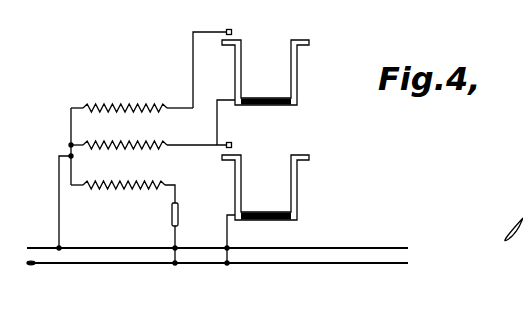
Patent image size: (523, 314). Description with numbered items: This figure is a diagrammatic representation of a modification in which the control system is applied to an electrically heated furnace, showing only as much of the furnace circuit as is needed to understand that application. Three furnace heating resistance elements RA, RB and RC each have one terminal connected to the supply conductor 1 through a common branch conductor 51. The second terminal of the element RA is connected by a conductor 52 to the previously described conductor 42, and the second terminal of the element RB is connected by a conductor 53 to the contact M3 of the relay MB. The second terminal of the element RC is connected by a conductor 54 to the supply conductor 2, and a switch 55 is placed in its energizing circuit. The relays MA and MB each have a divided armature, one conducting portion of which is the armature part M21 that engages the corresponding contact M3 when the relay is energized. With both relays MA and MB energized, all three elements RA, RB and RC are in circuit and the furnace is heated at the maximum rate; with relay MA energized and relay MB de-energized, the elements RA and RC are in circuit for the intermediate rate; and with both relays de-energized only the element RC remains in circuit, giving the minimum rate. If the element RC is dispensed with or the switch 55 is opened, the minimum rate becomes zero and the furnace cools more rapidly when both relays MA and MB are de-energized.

The supply conductor 1 is at (40, 247).
The supply conductor 2 is at (29, 263).
The conductor 42 is at (217, 100).
The common branch conductor 51 is at (58, 181).
The conductor 52 is at (199, 140).
The conductor 53 is at (193, 55).
The conductor 54 is at (172, 203).
The switch 55 is at (172, 218).
The furnace heating resistance element RA is at (141, 145).
The furnace heating resistance element RB is at (125, 107).
The furnace heating resistance element RC is at (139, 185).
The relay contact M3 is at (233, 32).
The armature conducting portion M21 is at (262, 60).
The relay MB is at (317, 79).
The relay MA is at (298, 205).